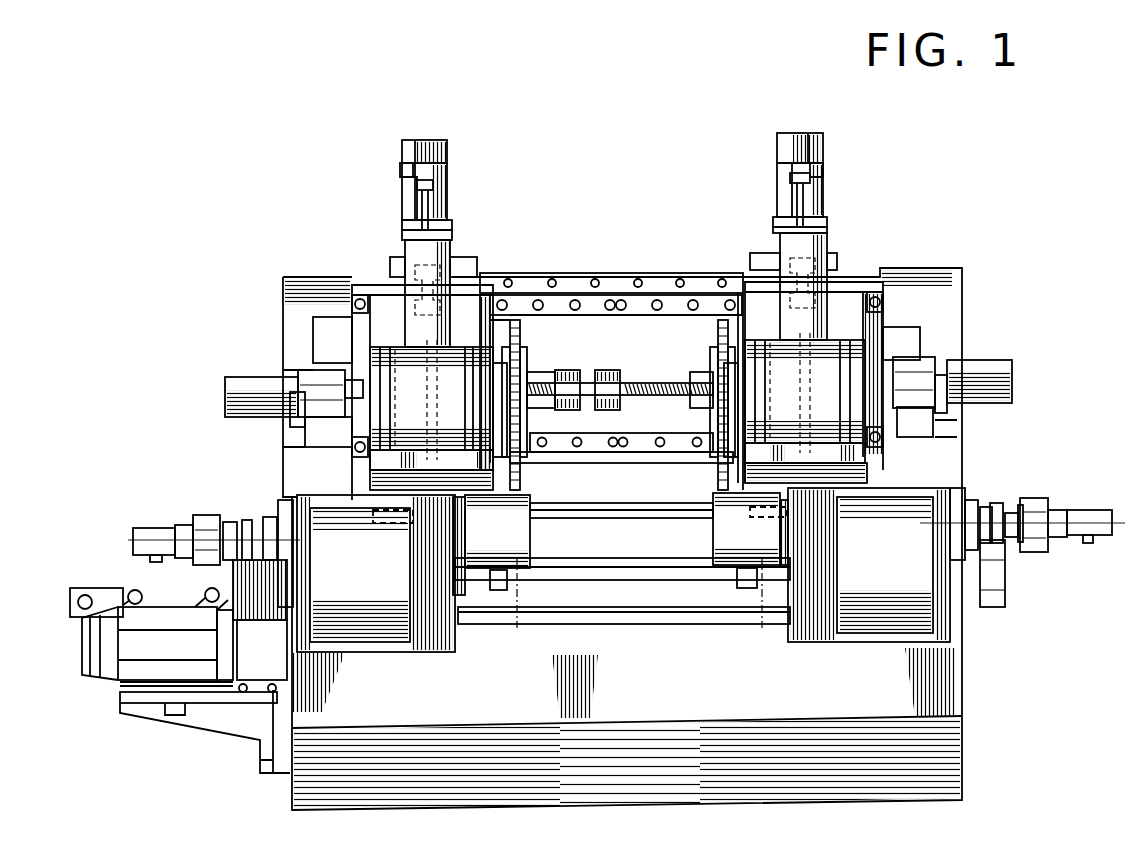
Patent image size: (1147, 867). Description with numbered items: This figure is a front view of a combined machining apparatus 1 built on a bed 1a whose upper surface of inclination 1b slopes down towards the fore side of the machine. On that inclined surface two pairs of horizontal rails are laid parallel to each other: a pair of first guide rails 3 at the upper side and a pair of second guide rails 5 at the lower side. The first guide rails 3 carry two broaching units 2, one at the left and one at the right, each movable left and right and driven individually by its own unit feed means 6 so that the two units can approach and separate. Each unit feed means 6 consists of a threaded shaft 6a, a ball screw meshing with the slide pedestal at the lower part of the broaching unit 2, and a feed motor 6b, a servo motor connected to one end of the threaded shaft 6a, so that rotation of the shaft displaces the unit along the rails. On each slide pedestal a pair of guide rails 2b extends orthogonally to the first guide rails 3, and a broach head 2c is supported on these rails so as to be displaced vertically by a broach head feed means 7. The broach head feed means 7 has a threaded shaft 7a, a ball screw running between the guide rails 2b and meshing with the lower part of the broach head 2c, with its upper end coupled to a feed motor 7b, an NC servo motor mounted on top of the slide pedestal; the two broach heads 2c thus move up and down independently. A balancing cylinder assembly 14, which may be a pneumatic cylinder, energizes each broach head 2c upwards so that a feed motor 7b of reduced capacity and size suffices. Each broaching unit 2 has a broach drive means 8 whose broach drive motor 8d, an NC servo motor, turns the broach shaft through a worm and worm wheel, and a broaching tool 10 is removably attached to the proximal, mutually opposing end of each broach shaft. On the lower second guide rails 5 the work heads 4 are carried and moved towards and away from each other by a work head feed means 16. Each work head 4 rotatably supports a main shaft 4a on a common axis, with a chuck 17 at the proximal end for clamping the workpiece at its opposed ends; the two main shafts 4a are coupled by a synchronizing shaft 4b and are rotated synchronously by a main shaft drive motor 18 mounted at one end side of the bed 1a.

The combined machining apparatus 1 is at (966, 687).
The bed 1a is at (935, 746).
The upper surface of inclination 1b is at (932, 448).
The broaching unit 2 is at (332, 358).
The guide rails 2b is at (393, 460).
The broach head 2c is at (392, 412).
The first guide rails 3 is at (641, 315).
The work head 4 is at (355, 620).
The main shaft 4a is at (622, 608).
The synchronizing shaft 4b is at (657, 585).
The second guide rails 5 is at (633, 520).
The unit feed means 6 is at (240, 372).
The threaded shaft 6a is at (558, 412).
The feed motor 6b is at (226, 400).
The broach head feed means 7 is at (457, 209).
The threaded shaft 7a is at (437, 384).
The feed motor 7b is at (436, 157).
The broach drive means 8 is at (402, 292).
The broach drive motor 8d is at (452, 238).
The broaching tool 10 is at (522, 340).
The balancing cylinder assembly 14 is at (417, 200).
The work head feed means 16 is at (210, 518).
The chuck 17 is at (540, 524).
The main shaft drive motor 18 is at (130, 690).